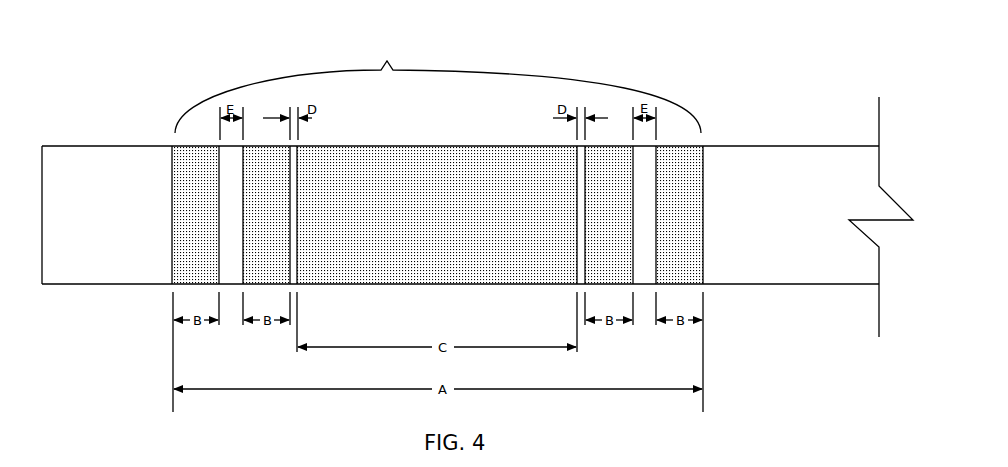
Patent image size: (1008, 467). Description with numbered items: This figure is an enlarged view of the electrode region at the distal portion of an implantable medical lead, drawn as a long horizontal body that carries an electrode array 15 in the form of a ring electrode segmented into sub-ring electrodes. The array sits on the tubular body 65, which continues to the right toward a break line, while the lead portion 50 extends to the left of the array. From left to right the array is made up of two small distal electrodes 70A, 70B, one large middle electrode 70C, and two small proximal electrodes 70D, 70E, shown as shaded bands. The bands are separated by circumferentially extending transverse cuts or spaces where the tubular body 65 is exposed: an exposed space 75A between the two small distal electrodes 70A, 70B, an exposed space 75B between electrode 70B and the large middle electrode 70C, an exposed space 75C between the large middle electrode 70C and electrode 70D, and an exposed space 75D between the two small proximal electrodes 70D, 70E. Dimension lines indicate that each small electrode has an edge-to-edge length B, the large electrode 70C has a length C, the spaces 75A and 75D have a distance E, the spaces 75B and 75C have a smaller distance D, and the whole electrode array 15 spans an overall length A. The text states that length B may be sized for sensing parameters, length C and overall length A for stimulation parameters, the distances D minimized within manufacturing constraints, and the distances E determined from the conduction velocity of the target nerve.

The substrate 50 is at (42, 155).
The tubular body 65 is at (774, 146).
The electrode array 15 is at (438, 89).
The small distal electrode 70A is at (185, 146).
The small distal electrode 70B is at (255, 146).
The large middle electrode 70C is at (461, 146).
The small proximal electrode 70D is at (611, 146).
The small proximal electrode 70E is at (677, 146).
The exposed space 75A is at (229, 285).
The exposed space 75B is at (297, 258).
The exposed space 75C is at (577, 247).
The exposed space 75D is at (642, 285).